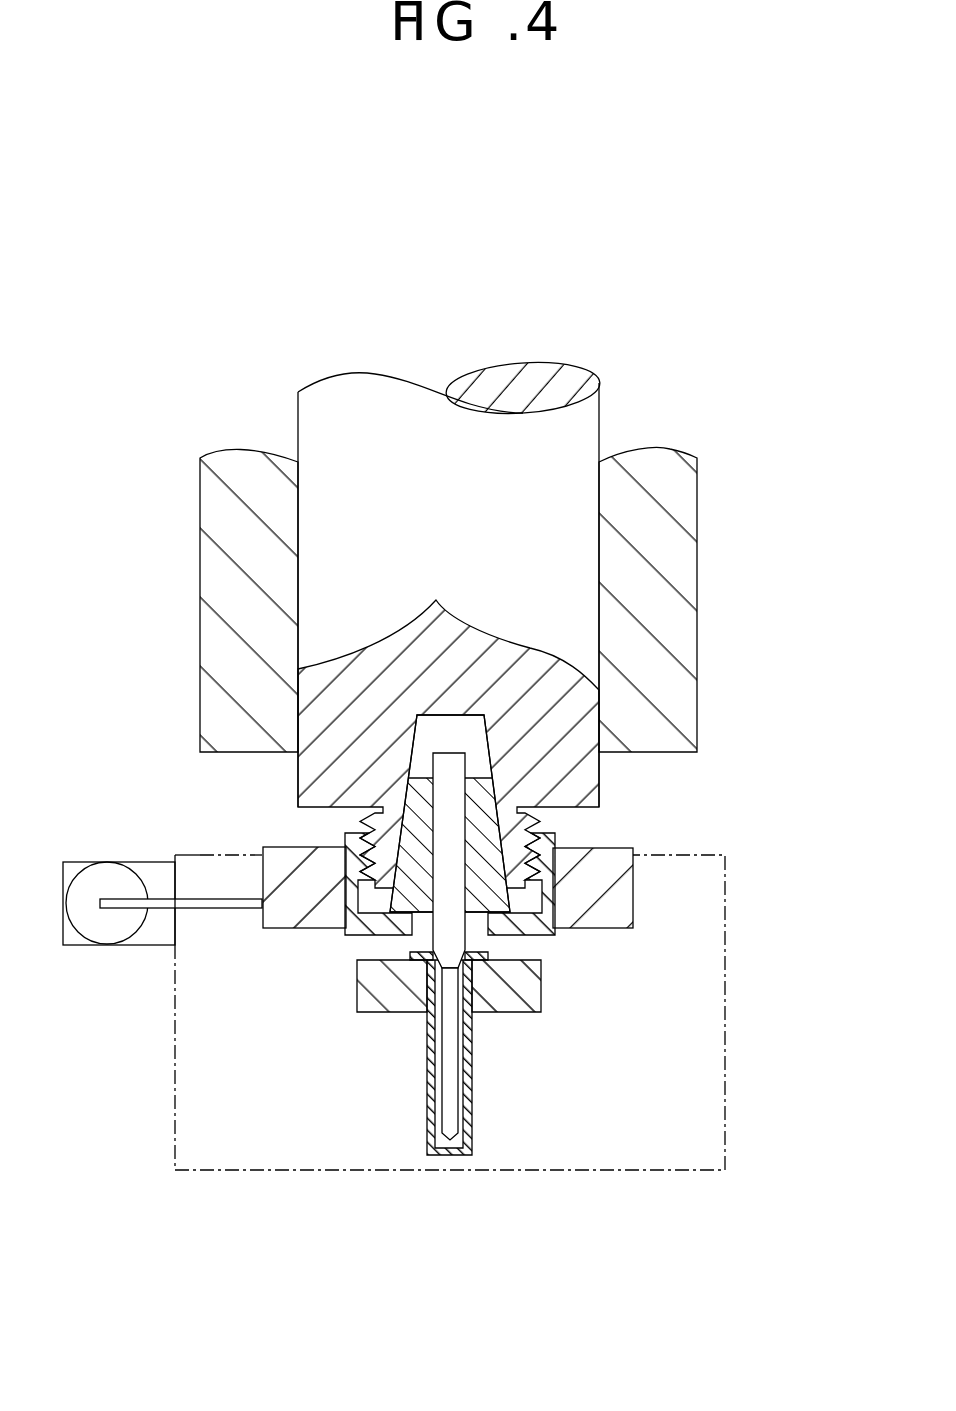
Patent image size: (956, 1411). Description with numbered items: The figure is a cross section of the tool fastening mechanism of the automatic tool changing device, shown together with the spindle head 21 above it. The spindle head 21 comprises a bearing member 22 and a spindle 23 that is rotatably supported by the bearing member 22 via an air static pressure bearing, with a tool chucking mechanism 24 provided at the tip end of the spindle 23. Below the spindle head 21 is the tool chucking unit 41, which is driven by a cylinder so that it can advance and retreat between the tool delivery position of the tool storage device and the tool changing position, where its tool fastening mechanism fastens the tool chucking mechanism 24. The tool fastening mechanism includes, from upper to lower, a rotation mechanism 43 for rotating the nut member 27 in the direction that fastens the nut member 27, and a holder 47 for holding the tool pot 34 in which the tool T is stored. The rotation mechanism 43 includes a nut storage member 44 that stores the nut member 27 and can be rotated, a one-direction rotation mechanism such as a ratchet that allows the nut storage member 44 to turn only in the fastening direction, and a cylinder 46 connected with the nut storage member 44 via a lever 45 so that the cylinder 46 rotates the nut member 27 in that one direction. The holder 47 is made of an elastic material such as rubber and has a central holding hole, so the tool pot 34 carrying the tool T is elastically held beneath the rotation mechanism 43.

The spindle head 21 is at (717, 327).
The bearing member 22 is at (697, 572).
The spindle 23 is at (531, 365).
The tool chucking mechanism 24 is at (553, 838).
The nut member 27 is at (552, 880).
The tool pot 34 is at (472, 1120).
The tool T is at (452, 1050).
The holder 47 is at (541, 992).
The tool chucking unit 41 is at (244, 1172).
The rotation mechanism 43 is at (204, 967).
The nut storage member 44 is at (304, 942).
The lever 45 is at (205, 909).
The cylinder 46 is at (106, 937).